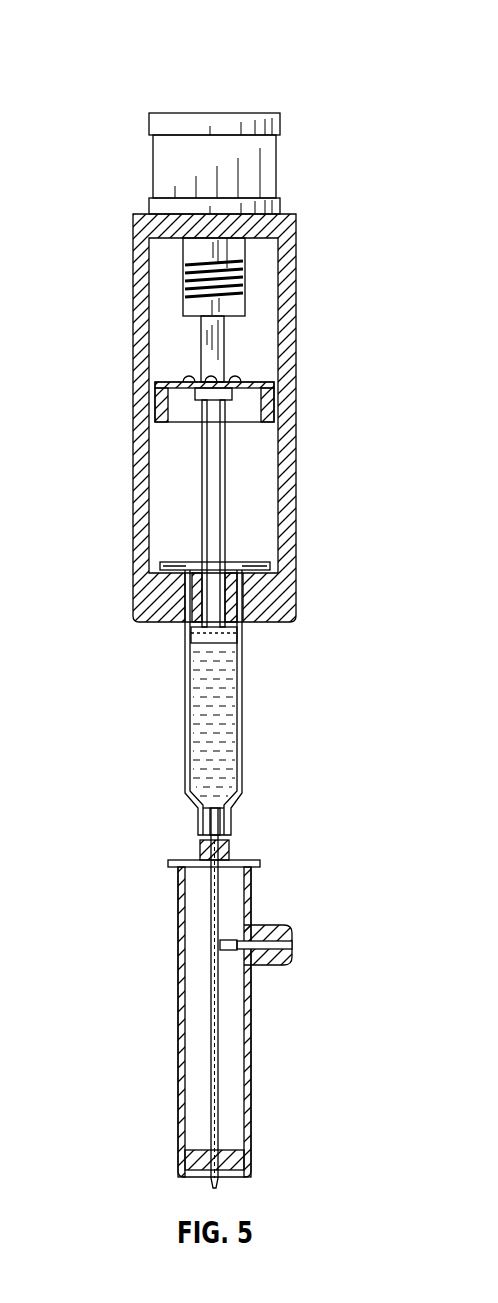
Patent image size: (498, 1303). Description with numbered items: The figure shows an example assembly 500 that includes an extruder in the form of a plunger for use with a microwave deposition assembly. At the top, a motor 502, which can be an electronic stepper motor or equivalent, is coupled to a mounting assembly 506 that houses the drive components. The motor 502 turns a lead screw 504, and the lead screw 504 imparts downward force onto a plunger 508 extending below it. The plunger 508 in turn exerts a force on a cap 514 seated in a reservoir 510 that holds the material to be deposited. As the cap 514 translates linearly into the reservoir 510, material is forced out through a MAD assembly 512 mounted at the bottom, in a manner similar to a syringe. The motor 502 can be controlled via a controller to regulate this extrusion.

The assembly 500 is at (120, 44).
The motor 502 is at (277, 166).
The lead screw 504 is at (222, 352).
The mounting assembly 506 is at (297, 450).
The plunger 508 is at (222, 526).
The reservoir 510 is at (225, 708).
The MAD assembly 512 is at (262, 864).
The cap 514 is at (236, 635).